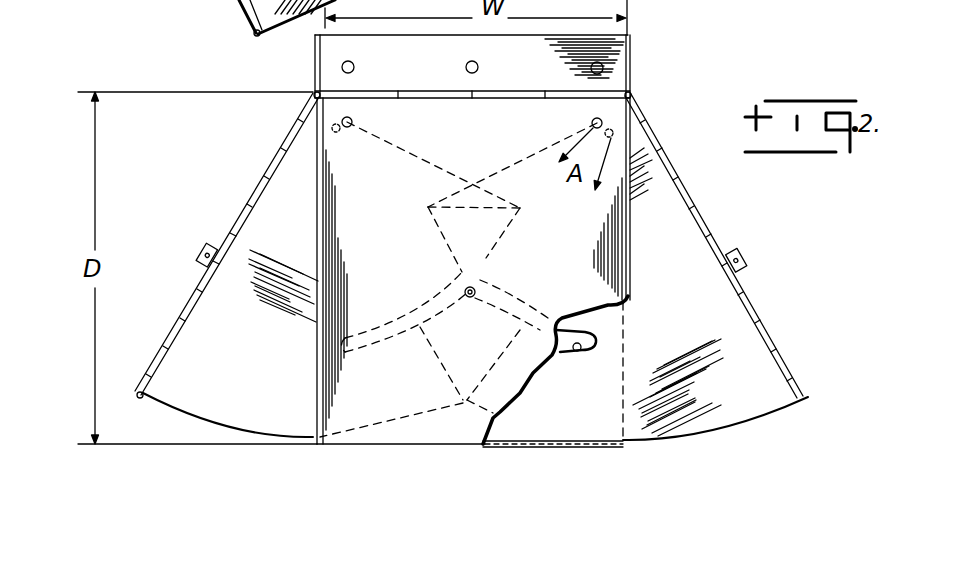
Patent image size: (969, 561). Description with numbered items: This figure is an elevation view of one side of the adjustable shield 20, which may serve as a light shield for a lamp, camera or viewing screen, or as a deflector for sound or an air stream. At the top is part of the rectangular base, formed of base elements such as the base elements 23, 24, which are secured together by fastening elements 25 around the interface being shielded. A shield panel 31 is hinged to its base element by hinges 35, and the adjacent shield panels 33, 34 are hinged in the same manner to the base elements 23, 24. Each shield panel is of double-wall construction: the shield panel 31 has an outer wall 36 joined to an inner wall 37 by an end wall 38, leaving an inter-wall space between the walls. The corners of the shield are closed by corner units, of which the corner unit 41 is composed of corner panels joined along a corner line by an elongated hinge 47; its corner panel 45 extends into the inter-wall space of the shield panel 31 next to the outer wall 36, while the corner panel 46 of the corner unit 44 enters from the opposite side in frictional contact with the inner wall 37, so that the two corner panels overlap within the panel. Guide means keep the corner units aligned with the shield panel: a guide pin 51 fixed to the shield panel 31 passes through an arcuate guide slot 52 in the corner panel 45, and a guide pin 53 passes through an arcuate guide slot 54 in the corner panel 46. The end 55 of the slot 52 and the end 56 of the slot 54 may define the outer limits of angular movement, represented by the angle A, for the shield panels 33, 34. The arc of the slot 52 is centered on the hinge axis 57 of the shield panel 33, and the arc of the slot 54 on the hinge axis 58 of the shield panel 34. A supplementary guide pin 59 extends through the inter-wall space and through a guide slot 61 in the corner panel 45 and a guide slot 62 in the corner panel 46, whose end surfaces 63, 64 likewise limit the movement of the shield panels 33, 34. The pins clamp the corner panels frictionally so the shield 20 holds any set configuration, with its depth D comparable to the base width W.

The adjustable shield 20 is at (724, 111).
The base element 23 is at (557, 40).
The base element 24 is at (316, 45).
The fastening elements 25 is at (479, 67).
The shield panel 31 is at (411, 449).
The shield panel 33 is at (807, 397).
The shield panel 34 is at (141, 396).
The hinges 35 is at (311, 101).
The outer wall 36 is at (612, 250).
The inner wall 37 is at (503, 433).
The end wall 38 is at (545, 448).
The corner unit 41 is at (710, 221).
The corner unit 44 is at (275, 159).
The corner panel 45 is at (713, 427).
The corner panel 46 is at (212, 458).
The elongated hinge 47 is at (759, 312).
The guide pin 51 is at (638, 100).
The arcuate guide slot 52 is at (640, 105).
The guide pin 53 is at (350, 115).
The arcuate guide slot 54 is at (340, 128).
The end of guide slot 55 is at (590, 123).
The end of guide slot 56 is at (349, 128).
The hinge axis 57 is at (635, 96).
The hinge axis 58 is at (314, 92).
The guide pin 59 is at (197, 252).
The guide slot 61 is at (578, 352).
The guide slot 62 is at (358, 348).
The end surface 63 is at (472, 288).
The end surface 64 is at (478, 285).